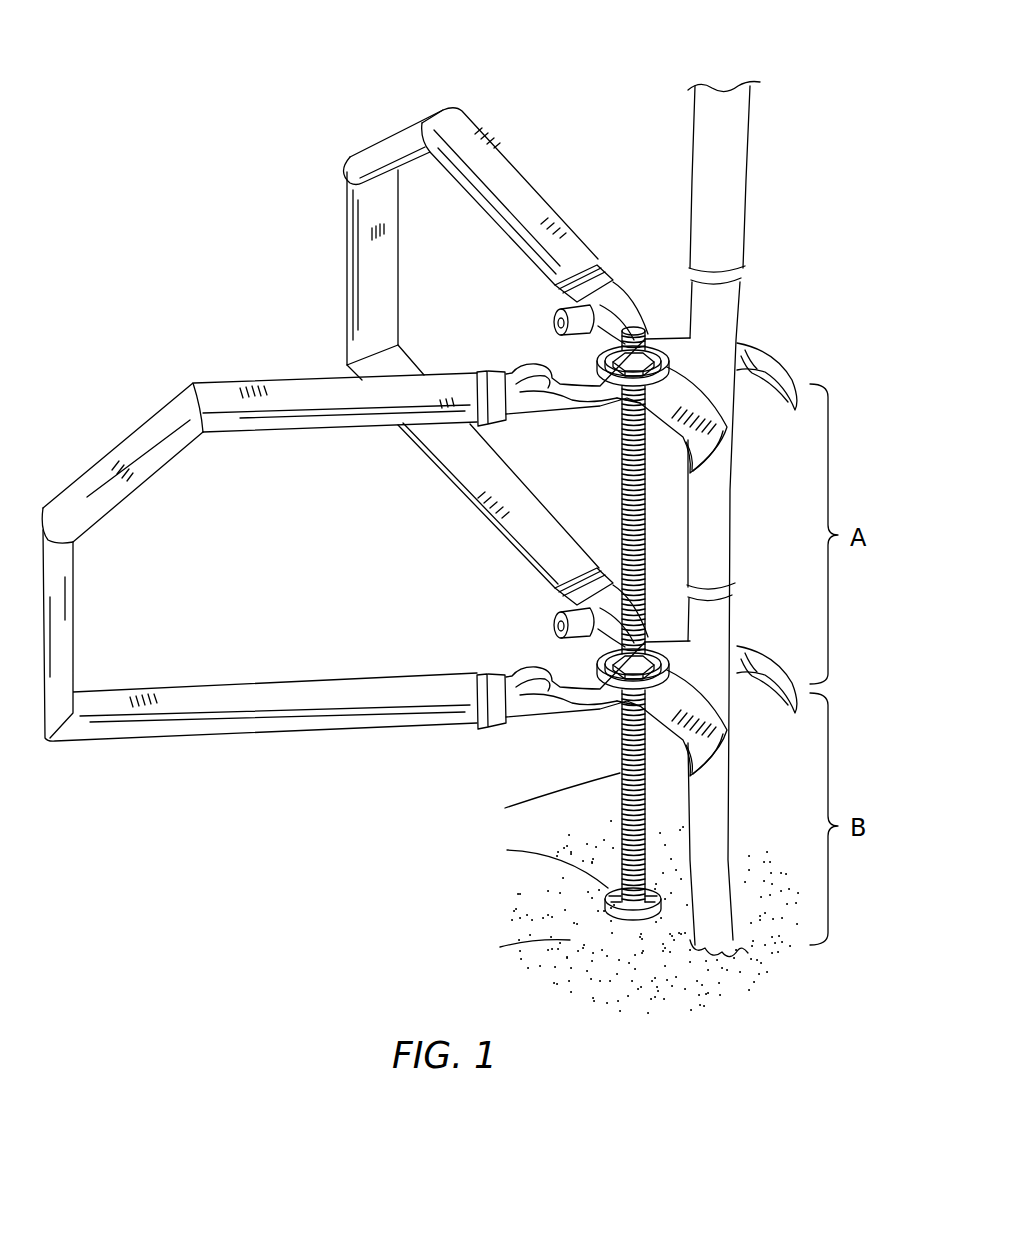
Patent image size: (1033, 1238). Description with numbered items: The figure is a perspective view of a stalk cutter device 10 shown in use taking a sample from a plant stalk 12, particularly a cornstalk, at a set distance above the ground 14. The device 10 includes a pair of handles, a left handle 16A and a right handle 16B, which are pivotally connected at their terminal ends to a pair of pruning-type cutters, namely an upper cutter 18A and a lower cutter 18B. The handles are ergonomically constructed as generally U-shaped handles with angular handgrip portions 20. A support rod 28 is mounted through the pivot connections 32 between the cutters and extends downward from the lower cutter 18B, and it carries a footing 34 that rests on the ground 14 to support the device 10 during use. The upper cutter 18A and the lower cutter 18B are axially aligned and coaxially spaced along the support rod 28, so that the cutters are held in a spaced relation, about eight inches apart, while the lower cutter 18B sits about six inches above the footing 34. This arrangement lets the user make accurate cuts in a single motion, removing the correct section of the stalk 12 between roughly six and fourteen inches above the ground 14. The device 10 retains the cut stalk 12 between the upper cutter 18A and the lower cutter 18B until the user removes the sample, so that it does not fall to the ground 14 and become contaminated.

The stalk cutter device 10 is at (163, 138).
The plant stalk 12 is at (705, 158).
The ground 14 is at (570, 942).
The left handle 16A is at (510, 185).
The right handle 16B is at (300, 380).
The upper cutter 18A is at (766, 318).
The lower cutter 18B is at (570, 741).
The angular handgrip portion 20 is at (388, 147).
The support rod 28 is at (620, 485).
The pivot connection 32 is at (610, 371).
The footing 34 is at (608, 892).